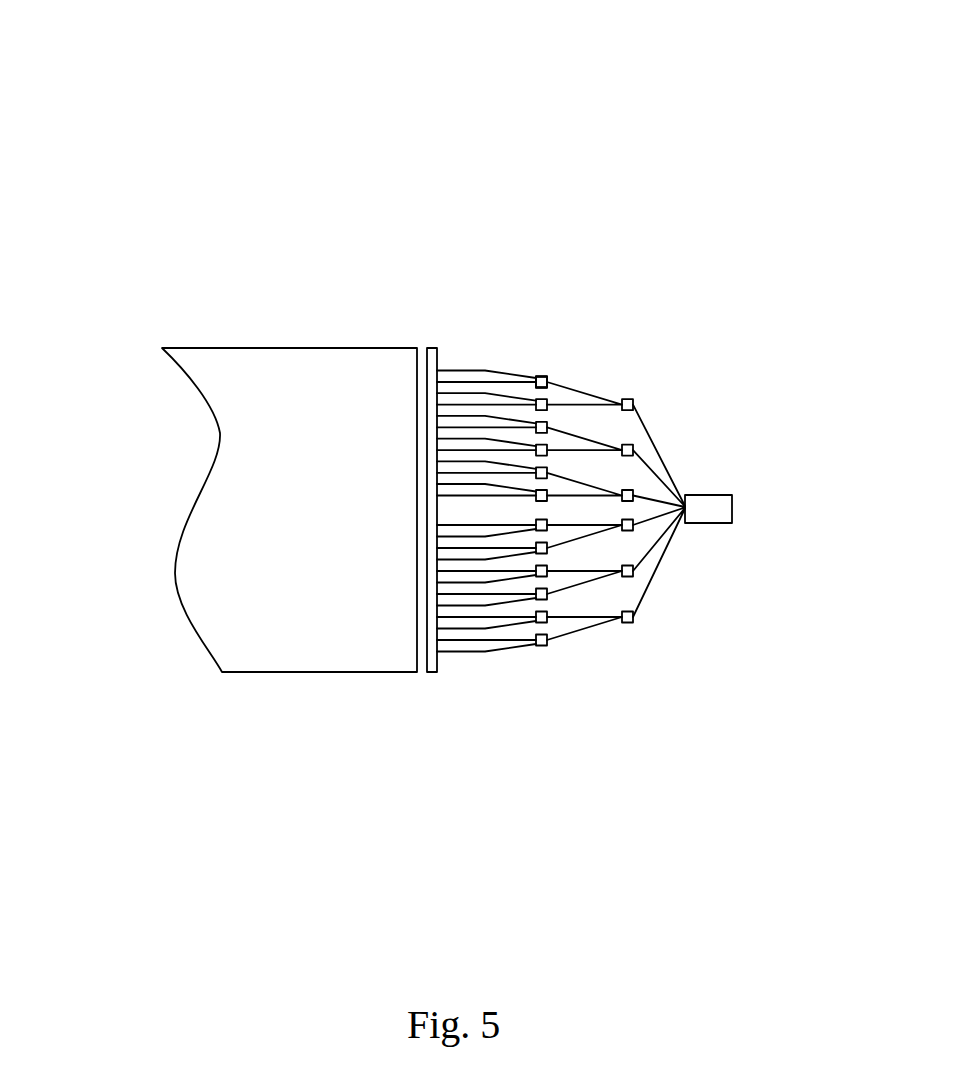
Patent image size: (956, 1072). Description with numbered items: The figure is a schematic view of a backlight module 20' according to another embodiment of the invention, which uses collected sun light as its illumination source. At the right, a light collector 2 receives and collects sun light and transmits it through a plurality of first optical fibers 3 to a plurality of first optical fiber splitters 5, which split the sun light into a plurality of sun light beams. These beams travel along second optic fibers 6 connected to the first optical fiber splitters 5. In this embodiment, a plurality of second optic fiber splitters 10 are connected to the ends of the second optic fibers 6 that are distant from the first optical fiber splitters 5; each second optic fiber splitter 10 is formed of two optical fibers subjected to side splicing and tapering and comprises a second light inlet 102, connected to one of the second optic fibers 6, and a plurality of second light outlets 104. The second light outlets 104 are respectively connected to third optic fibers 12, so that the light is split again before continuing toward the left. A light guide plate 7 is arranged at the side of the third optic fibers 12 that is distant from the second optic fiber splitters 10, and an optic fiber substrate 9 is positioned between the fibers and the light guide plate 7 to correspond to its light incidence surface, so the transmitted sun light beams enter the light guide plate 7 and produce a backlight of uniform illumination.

The backlight module 20' is at (432, 336).
The light collector 2 is at (703, 520).
The first optical fibers 3 is at (660, 455).
The first optical fiber splitters 5 is at (634, 400).
The second optic fibers 6 is at (583, 395).
The light guide plate 7 is at (270, 417).
The optic fiber substrate 9 is at (435, 380).
The second optic fiber splitters 10 is at (540, 375).
The second light inlet 102 is at (550, 377).
The second light outlets 104 is at (535, 377).
The third optic fibers 12 is at (477, 367).